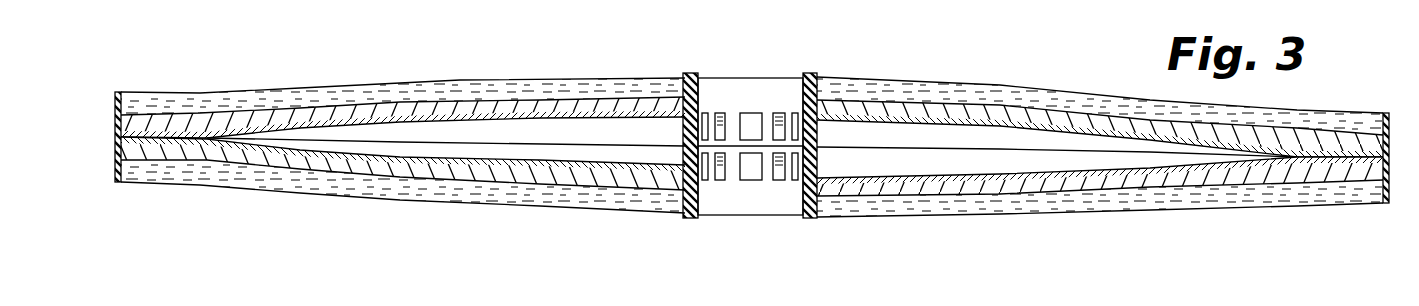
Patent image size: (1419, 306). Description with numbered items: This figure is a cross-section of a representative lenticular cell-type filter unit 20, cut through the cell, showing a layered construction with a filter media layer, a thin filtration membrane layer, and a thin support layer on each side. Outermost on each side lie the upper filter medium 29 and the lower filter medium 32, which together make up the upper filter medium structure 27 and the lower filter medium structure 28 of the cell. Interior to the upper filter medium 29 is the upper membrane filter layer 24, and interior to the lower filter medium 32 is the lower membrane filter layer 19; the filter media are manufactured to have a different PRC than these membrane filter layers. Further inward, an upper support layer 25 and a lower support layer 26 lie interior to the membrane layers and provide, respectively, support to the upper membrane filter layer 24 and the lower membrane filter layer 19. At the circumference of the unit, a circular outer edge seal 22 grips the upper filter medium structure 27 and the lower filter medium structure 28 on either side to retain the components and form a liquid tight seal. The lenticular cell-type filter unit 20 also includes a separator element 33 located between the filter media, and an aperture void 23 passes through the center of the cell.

The lenticular cell-type filter unit 20 is at (292, 48).
The outer edge seal 22 is at (142, 95).
The upper filter medium 29 is at (373, 93).
The upper membrane filter layer 24 is at (428, 107).
The upper support layer 25 is at (510, 115).
The lower support layer 26 is at (440, 168).
The lower membrane filter layer 19 is at (488, 180).
The lower filter medium 32 is at (562, 207).
The separator element 33 is at (968, 143).
The upper filter medium structure 27 is at (693, 103).
The lower filter medium structure 28 is at (708, 250).
The aperture void 23 is at (750, 96).